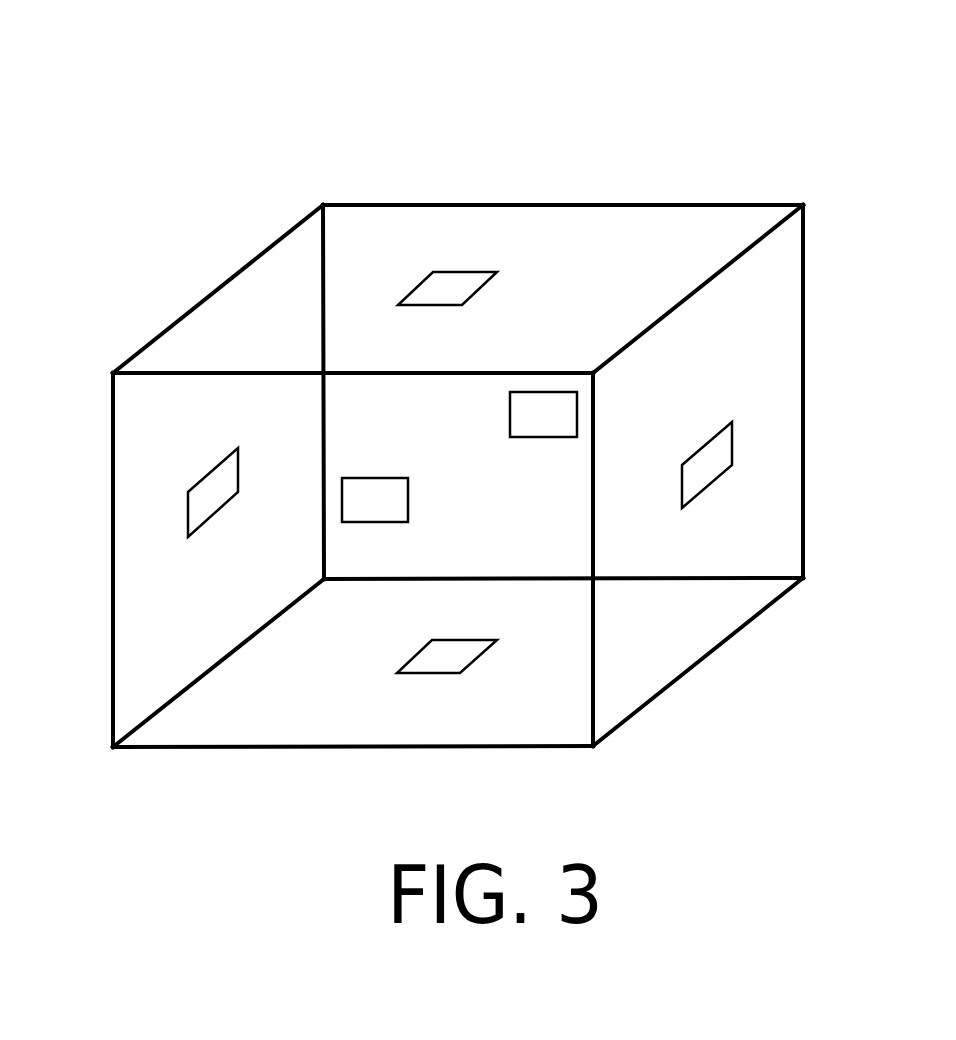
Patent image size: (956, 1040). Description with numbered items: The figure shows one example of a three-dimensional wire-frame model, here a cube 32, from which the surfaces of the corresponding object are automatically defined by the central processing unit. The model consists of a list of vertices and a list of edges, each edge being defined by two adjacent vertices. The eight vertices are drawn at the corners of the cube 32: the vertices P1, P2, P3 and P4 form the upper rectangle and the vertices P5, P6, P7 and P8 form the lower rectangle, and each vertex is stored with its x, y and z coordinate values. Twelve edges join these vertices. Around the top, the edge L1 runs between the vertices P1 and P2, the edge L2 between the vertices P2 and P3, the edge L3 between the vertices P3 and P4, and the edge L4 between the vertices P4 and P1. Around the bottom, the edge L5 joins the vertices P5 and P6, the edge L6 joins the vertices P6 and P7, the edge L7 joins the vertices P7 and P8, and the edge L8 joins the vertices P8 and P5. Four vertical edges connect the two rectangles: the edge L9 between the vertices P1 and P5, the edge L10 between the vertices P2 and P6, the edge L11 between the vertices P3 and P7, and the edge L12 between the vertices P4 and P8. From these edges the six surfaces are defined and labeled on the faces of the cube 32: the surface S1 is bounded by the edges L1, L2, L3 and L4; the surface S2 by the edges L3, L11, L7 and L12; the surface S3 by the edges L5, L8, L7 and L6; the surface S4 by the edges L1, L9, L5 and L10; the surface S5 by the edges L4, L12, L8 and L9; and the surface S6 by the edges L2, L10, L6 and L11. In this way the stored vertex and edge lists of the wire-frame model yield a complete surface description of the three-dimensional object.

The cube 32 is at (465, 409).
The vertex P1 is at (85, 371).
The vertex P2 is at (318, 186).
The vertex P3 is at (820, 186).
The vertex P4 is at (621, 390).
The vertex P5 is at (86, 768).
The vertex P6 is at (353, 561).
The vertex P7 is at (831, 576).
The vertex P8 is at (614, 767).
The edge L1 is at (218, 289).
The edge L2 is at (563, 184).
The edge L3 is at (698, 289).
The edge L4 is at (353, 351).
The edge L5 is at (218, 663).
The edge L6 is at (563, 560).
The edge L7 is at (698, 662).
The edge L8 is at (353, 772).
The edge L9 is at (84, 560).
The edge L10 is at (291, 392).
The edge L11 is at (840, 391).
The edge L12 is at (629, 559).
The surface S1 is at (447, 288).
The surface S2 is at (707, 465).
The surface S3 is at (447, 656).
The surface S4 is at (213, 492).
The surface S5 is at (375, 500).
The surface S6 is at (543, 414).